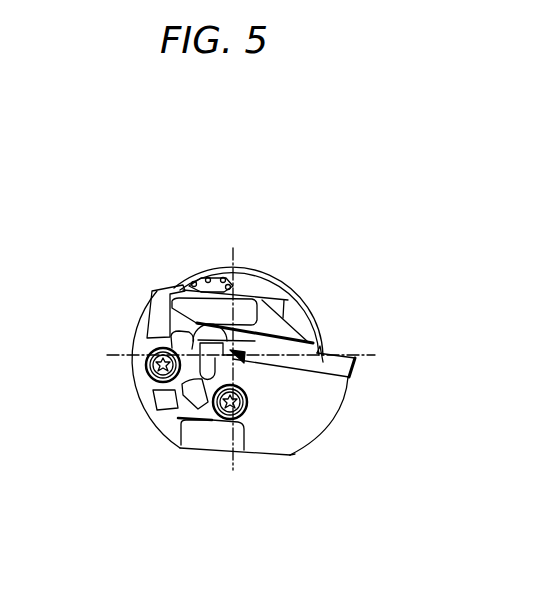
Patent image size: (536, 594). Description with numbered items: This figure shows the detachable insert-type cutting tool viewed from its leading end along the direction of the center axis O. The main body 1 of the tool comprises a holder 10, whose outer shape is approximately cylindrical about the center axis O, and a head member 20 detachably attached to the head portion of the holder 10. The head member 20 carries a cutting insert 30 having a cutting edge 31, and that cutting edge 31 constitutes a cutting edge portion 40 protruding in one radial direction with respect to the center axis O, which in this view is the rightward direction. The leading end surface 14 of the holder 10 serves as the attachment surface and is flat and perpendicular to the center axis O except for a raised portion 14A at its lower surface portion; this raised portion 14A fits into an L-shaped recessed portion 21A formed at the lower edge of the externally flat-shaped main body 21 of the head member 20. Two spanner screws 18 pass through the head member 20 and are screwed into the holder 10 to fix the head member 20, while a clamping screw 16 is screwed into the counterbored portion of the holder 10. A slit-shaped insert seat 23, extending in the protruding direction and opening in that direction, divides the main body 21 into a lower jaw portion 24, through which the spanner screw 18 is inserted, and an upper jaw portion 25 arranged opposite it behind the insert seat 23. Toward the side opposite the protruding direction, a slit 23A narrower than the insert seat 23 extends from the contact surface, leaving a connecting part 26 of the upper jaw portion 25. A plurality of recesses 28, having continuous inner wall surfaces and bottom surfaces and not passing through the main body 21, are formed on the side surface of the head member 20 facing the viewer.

The main body 1 is at (301, 241).
The holder 10 is at (206, 243).
The leading end surface 14 is at (160, 312).
The raised portion 14A is at (187, 448).
The clamping screw 16 is at (211, 280).
The spanner screw 18 is at (148, 372).
The head member 20 is at (255, 429).
The main body 21 is at (312, 450).
The L-shaped recessed portion 21A is at (178, 443).
The insert seat 23 is at (308, 393).
The slit 23A is at (175, 347).
The lower jaw portion 24 is at (328, 412).
The upper jaw portion 25 is at (275, 332).
The connecting part 26 is at (180, 334).
The recesses 28 is at (195, 310).
The cutting insert 30 is at (399, 332).
The cutting edge 31 is at (357, 356).
The cutting edge portion 40 is at (394, 335).
The center axis O is at (233, 353).